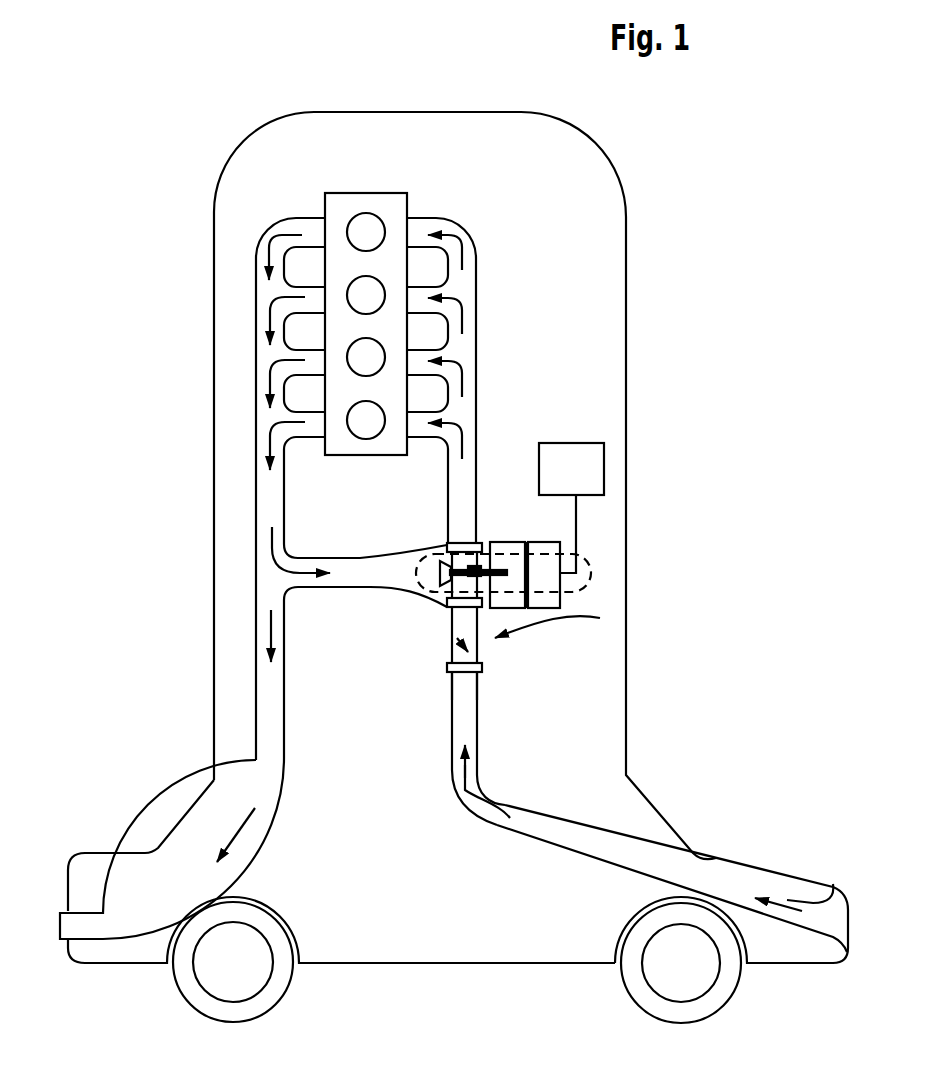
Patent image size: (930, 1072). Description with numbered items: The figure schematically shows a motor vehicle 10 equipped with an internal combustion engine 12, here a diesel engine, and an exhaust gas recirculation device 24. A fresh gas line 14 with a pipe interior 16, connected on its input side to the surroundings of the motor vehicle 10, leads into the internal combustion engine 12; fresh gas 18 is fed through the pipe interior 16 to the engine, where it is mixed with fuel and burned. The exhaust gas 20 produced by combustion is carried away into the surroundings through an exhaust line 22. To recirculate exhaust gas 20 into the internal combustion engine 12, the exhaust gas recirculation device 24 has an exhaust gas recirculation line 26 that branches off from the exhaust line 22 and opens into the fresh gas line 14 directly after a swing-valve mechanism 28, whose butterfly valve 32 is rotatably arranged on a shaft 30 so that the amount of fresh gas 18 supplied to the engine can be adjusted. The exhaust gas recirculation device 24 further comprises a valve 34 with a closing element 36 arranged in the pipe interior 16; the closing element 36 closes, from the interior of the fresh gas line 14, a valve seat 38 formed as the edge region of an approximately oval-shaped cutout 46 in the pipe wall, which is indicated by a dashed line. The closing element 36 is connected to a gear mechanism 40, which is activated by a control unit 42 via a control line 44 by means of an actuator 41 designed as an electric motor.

The motor vehicle 10 is at (118, 853).
The internal combustion engine 12 is at (300, 203).
The fresh gas line 14 is at (479, 720).
The pipe interior 16 is at (592, 842).
The fresh gas 18 is at (780, 900).
The exhaust gas 20 is at (237, 833).
The exhaust line 22 is at (257, 703).
The exhaust gas recirculation device 24 is at (385, 602).
The exhaust gas recirculation line 26 is at (327, 558).
The swing-valve mechanism 28 is at (600, 618).
The shaft 30 is at (453, 650).
The butterfly valve 32 is at (468, 650).
The valve 34 is at (435, 540).
The closing element 36 is at (463, 542).
The valve seat 38 is at (447, 600).
The gear mechanism 40 is at (512, 542).
The actuator 41 is at (545, 542).
The control unit 42 is at (604, 462).
The control line 44 is at (577, 537).
The cutout 46 is at (592, 575).